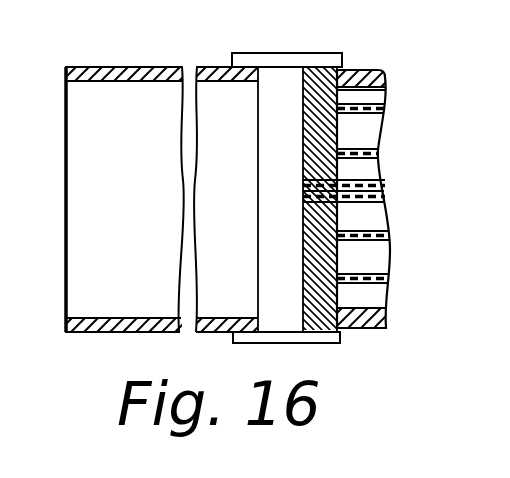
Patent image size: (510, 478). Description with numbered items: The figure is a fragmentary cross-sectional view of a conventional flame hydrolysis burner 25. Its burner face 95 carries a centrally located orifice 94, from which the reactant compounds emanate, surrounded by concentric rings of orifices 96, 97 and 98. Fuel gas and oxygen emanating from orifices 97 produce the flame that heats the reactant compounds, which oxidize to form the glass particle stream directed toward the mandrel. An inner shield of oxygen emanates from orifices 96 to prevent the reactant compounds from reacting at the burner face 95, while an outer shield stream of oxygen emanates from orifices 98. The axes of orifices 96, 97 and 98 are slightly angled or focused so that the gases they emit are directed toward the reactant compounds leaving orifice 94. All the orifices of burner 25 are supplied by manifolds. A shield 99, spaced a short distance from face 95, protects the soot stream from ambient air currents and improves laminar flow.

The shield 99 is at (146, 66).
The burner 25 is at (365, 60).
The burner face 95 is at (300, 83).
The orifice 94 is at (303, 187).
The orifices 96 is at (337, 165).
The orifices 97 is at (337, 136).
The orifices 98 is at (337, 107).